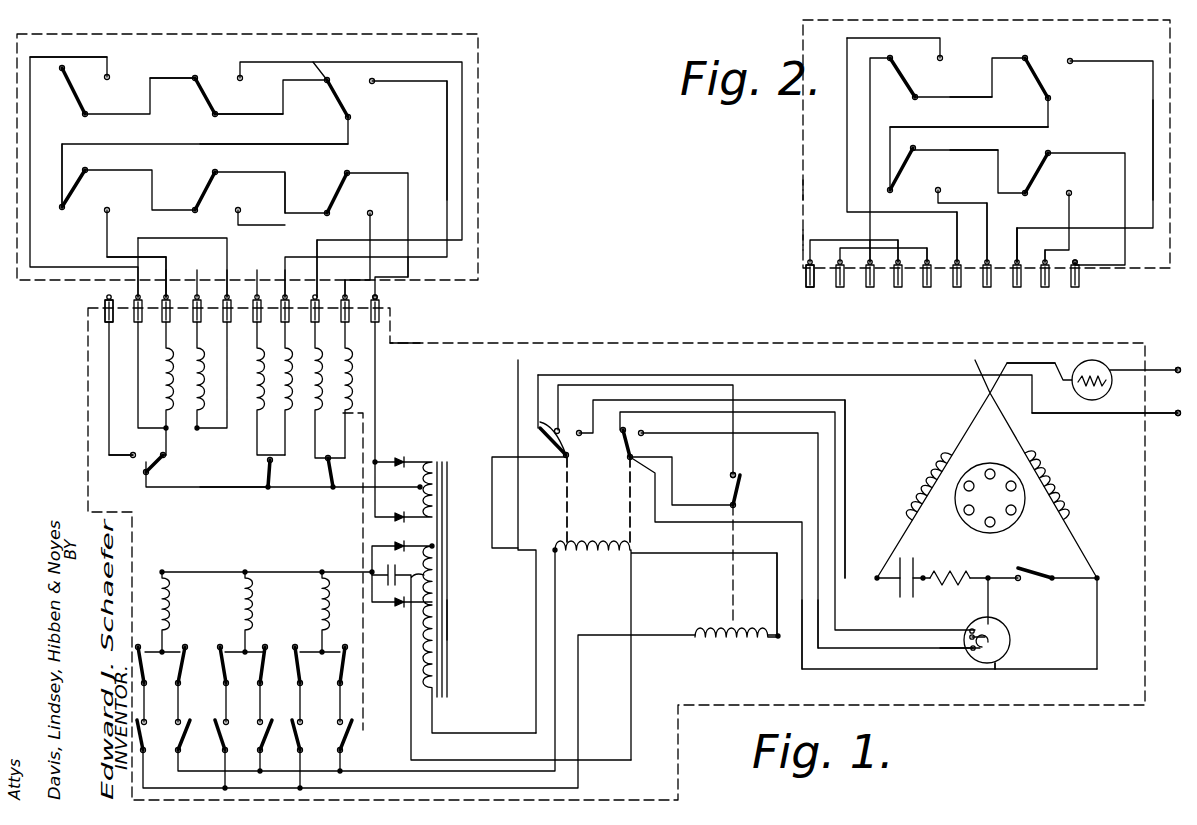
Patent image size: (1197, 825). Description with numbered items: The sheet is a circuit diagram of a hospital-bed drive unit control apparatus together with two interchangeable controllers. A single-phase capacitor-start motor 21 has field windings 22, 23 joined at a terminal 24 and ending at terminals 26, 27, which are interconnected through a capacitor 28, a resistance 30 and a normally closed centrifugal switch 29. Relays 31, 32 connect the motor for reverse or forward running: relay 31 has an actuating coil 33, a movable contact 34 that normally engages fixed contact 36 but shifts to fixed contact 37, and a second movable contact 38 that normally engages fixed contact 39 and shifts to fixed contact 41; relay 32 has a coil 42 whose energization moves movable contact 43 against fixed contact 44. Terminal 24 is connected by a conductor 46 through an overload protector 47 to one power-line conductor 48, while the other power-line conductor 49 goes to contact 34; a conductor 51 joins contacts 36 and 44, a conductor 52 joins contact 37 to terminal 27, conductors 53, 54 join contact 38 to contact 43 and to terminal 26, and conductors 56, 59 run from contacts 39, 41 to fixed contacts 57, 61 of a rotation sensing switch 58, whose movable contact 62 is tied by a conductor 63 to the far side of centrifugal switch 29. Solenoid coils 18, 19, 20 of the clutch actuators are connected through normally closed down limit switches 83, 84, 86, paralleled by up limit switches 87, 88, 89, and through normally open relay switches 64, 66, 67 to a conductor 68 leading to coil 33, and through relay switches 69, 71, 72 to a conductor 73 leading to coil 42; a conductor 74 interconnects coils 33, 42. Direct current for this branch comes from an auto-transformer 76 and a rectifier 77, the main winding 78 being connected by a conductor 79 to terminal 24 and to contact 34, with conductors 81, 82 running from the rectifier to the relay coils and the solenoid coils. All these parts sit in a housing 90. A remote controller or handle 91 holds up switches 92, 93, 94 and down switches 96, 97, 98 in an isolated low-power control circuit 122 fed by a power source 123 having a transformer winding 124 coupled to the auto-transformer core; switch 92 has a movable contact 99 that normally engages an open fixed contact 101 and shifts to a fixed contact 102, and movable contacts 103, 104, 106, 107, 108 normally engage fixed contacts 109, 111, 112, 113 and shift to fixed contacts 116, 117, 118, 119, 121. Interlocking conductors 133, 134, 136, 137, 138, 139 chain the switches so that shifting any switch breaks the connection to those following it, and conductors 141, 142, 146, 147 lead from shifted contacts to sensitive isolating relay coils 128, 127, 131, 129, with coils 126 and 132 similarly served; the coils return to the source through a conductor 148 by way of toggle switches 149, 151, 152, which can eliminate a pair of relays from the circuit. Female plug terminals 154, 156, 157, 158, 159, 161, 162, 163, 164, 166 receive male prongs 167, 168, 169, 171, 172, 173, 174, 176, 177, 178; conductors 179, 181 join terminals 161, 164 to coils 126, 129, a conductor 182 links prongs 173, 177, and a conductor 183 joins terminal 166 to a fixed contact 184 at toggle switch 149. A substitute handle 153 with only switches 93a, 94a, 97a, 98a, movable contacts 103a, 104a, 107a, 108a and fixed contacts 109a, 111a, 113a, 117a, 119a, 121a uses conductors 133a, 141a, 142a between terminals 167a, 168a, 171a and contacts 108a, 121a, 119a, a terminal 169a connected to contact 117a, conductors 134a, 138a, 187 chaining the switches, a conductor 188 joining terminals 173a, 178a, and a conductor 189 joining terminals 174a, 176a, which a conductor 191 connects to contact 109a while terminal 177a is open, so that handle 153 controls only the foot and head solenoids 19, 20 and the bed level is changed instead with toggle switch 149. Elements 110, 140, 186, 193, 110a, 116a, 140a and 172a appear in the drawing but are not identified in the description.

In FIG. 1, the solenoid coil 18 is at (170, 608).
In FIG. 1, the solenoid coil 19 is at (252, 608).
In FIG. 1, the solenoid coil 20 is at (325, 610).
In FIG. 1, the electric motor 21 is at (1080, 518).
In FIG. 1, the field winding 22 is at (1055, 478).
In FIG. 1, the field winding 23 is at (928, 472).
In FIG. 1, the terminal 24 is at (985, 393).
In FIG. 1, the terminal 26 is at (1100, 576).
In FIG. 1, the terminal 27 is at (875, 581).
In FIG. 1, the capacitor 28 is at (900, 595).
In FIG. 1, the centrifugal switch 29 is at (1040, 585).
In FIG. 1, the resistance 30 is at (952, 578).
In FIG. 1, the relay 31 is at (555, 490).
In FIG. 1, the relay 32 is at (708, 570).
In FIG. 1, the actuating coil 33 is at (590, 545).
In FIG. 1, the movable contact 34 is at (568, 458).
In FIG. 1, the fixed contact 36 is at (538, 420).
In FIG. 1, the fixed contact 37 is at (578, 431).
In FIG. 1, the movable contact 38 is at (627, 452).
In FIG. 1, the fixed contact 39 is at (625, 445).
In FIG. 1, the fixed contact 41 is at (645, 431).
In FIG. 1, the relay coil 42 is at (722, 640).
In FIG. 1, the movable contact 43 is at (743, 487).
In FIG. 1, the fixed contact 44 is at (736, 472).
In FIG. 1, the conductor 46 is at (1033, 363).
In FIG. 1, the overload protector 47 is at (1082, 366).
In FIG. 1, the power line conductor 48 is at (1138, 366).
In FIG. 1, the power line conductor 49 is at (1085, 415).
In FIG. 1, the conductor 51 is at (735, 392).
In FIG. 1, the conductor 52 is at (846, 425).
In FIG. 1, the conductor 53 is at (675, 482).
In FIG. 1, the conductor 54 is at (895, 668).
In FIG. 1, the conductor 56 is at (800, 412).
In FIG. 1, the fixed contact 57 is at (968, 628).
In FIG. 1, the rotation sensing switch 58 is at (994, 668).
In FIG. 1, the conductor 59 is at (855, 650).
In FIG. 1, the fixed contact 61 is at (972, 660).
In FIG. 1, the movable contact 62 is at (992, 645).
In FIG. 1, the conductor 63 is at (1003, 615).
In FIG. 1, the relay switch 64 is at (185, 735).
In FIG. 1, the relay switch 66 is at (265, 735).
In FIG. 1, the relay switch 67 is at (348, 742).
In FIG. 1, the conductor 68 is at (448, 770).
In FIG. 1, the relay switch 69 is at (145, 742).
In FIG. 1, the relay switch 71 is at (228, 738).
In FIG. 1, the relay switch 72 is at (305, 738).
In FIG. 1, the conductor 73 is at (480, 787).
In FIG. 1, the conductor 74 is at (777, 582).
In FIG. 1, the auto-transformer 76 is at (450, 612).
In FIG. 1, the rectifier 77 is at (395, 612).
In FIG. 1, the main winding 78 is at (428, 668).
In FIG. 1, the conductor 79 is at (536, 600).
In FIG. 1, the conductor 81 is at (625, 700).
In FIG. 1, the conductor 82 is at (280, 571).
In FIG. 1, the down limit switch 83 is at (182, 665).
In FIG. 1, the down limit switch 84 is at (268, 667).
In FIG. 1, the down limit switch 86 is at (345, 672).
In FIG. 1, the up limit switch 87 is at (140, 655).
In FIG. 1, the up limit switch 88 is at (225, 668).
In FIG. 1, the up limit switch 89 is at (303, 670).
In FIG. 1, the housing 90 is at (690, 343).
In FIG. 1, the controller or handle 91 is at (480, 205).
In FIG. 1, the manual switch 92 is at (98, 95).
In FIG. 1, the manual switch 93 is at (230, 95).
In FIG. 1, the manual switch 94 is at (358, 105).
In FIG. 1, the manual switch 96 is at (80, 218).
In FIG. 1, the manual switch 97 is at (250, 185).
In FIG. 1, the manual switch 98 is at (352, 190).
In FIG. 1, the movable contact 99 is at (80, 114).
In FIG. 1, the fixed contact 101 is at (60, 70).
In FIG. 1, the fixed contact 102 is at (109, 75).
In FIG. 1, the movable contact 103 is at (203, 95).
In FIG. 1, the movable contact 104 is at (338, 100).
In FIG. 1, the movable contact 106 is at (80, 186).
In FIG. 1, the movable contact 107 is at (205, 200).
In FIG. 1, the movable contact 108 is at (350, 175).
In FIG. 1, the fixed contact 109 is at (193, 76).
In FIG. 1, the pivot 110 is at (325, 216).
In FIG. 1, the fixed contact 111 is at (333, 60).
In FIG. 1, the fixed contact 112 is at (60, 208).
In FIG. 1, the fixed contact 113 is at (193, 214).
In FIG. 1, the fixed contact 116 is at (238, 78).
In FIG. 1, the fixed contact 117 is at (374, 78).
In FIG. 1, the fixed contact 118 is at (109, 209).
In FIG. 1, the fixed contact 119 is at (241, 209).
In FIG. 1, the fixed contact 121 is at (356, 248).
In FIG. 1, the control circuit 122 is at (420, 347).
In FIG. 1, the power source 123 is at (415, 478).
In FIG. 1, the transformer winding 124 is at (428, 485).
In FIG. 1, the relay coil 126 is at (190, 368).
In FIG. 1, the relay coil 127 is at (280, 368).
In FIG. 1, the relay coil 128 is at (340, 365).
In FIG. 1, the relay coil 129 is at (160, 365).
In FIG. 1, the relay coil 131 is at (250, 368).
In FIG. 1, the relay coil 132 is at (310, 365).
In FIG. 1, the conductor 133 is at (420, 222).
In FIG. 1, the conductor 134 is at (286, 185).
In FIG. 1, the conductor 136 is at (152, 185).
In FIG. 1, the conductor 137 is at (237, 146).
In FIG. 1, the conductor 138 is at (247, 117).
In FIG. 1, the conductor 139 is at (122, 117).
In FIG. 1, the conductor 140 is at (447, 125).
In FIG. 1, the conductor 141 is at (370, 268).
In FIG. 1, the conductor 142 is at (335, 268).
In FIG. 1, the conductor 146 is at (250, 62).
In FIG. 1, the conductor 147 is at (68, 55).
In FIG. 1, the conductor 148 is at (222, 488).
In FIG. 1, the toggle switch 149 is at (140, 478).
In FIG. 1, the toggle switch 151 is at (278, 488).
In FIG. 1, the toggle switch 152 is at (338, 490).
In FIG. 2, the controller or handle 153 is at (803, 158).
In FIG. 1, the terminal 154 is at (382, 320).
In FIG. 2, the terminal 154 is at (1078, 292).
In FIG. 1, the terminal 156 is at (358, 320).
In FIG. 2, the terminal 156 is at (1052, 292).
In FIG. 1, the terminal 157 is at (330, 315).
In FIG. 2, the terminal 157 is at (1020, 288).
In FIG. 1, the terminal 158 is at (301, 315).
In FIG. 2, the terminal 158 is at (992, 292).
In FIG. 1, the terminal 159 is at (272, 315).
In FIG. 2, the terminal 159 is at (960, 288).
In FIG. 1, the terminal 161 is at (243, 315).
In FIG. 2, the terminal 161 is at (932, 292).
In FIG. 1, the terminal 162 is at (212, 320).
In FIG. 2, the terminal 162 is at (900, 288).
In FIG. 1, the terminal 163 is at (180, 315).
In FIG. 2, the terminal 163 is at (875, 292).
In FIG. 1, the terminal 164 is at (151, 315).
In FIG. 2, the terminal 164 is at (840, 288).
In FIG. 1, the terminal 166 is at (121, 315).
In FIG. 2, the terminal 166 is at (805, 288).
In FIG. 1, the prong 167 is at (380, 298).
In FIG. 1, the prong 168 is at (333, 278).
In FIG. 1, the prong 169 is at (302, 278).
In FIG. 1, the prong 171 is at (273, 278).
In FIG. 1, the prong 172 is at (243, 278).
In FIG. 1, the prong 173 is at (214, 278).
In FIG. 1, the prong 174 is at (183, 278).
In FIG. 1, the prong 176 is at (140, 260).
In FIG. 1, the prong 177 is at (84, 177).
In FIG. 1, the prong 178 is at (104, 298).
In FIG. 1, the conductor 179 is at (210, 432).
In FIG. 1, the conductor 181 is at (138, 395).
In FIG. 1, the conductor 182 is at (232, 245).
In FIG. 1, the conductor 183 is at (109, 372).
In FIG. 1, the fixed contact 184 is at (133, 455).
In FIG. 2, the selector unit 186 is at (803, 190).
In FIG. 2, the conductor 187 is at (915, 128).
In FIG. 2, the conductor 188 is at (803, 232).
In FIG. 2, the conductor 189 is at (868, 262).
In FIG. 2, the conductor 191 is at (847, 100).
In FIG. 1, the conductor 193 is at (168, 256).
In FIG. 2, the manual switch 93a is at (930, 80).
In FIG. 2, the manual switch 94a is at (1065, 82).
In FIG. 2, the manual switch 97a is at (928, 163).
In FIG. 2, the manual switch 98a is at (1052, 173).
In FIG. 2, the movable contact 103a is at (903, 90).
In FIG. 2, the movable contact 104a is at (1040, 88).
In FIG. 2, the movable contact 107a is at (905, 185).
In FIG. 2, the movable contact 108a is at (1050, 153).
In FIG. 2, the fixed contact 109a is at (888, 56).
In FIG. 2, the pivot 110a is at (1022, 190).
In FIG. 2, the fixed contact 111a is at (1038, 46).
In FIG. 2, the fixed contact 113a is at (913, 139).
In FIG. 2, the contact 116a is at (942, 58).
In FIG. 2, the fixed contact 117a is at (1072, 60).
In FIG. 2, the fixed contact 119a is at (941, 190).
In FIG. 2, the fixed contact 121a is at (1070, 198).
In FIG. 2, the conductor 133a is at (1093, 189).
In FIG. 2, the conductor 134a is at (975, 147).
In FIG. 2, the conductor 138a is at (937, 100).
In FIG. 2, the conductor 140a is at (1153, 105).
In FIG. 2, the conductor 141a is at (1050, 248).
In FIG. 2, the conductor 142a is at (992, 220).
In FIG. 2, the terminal 167a is at (1080, 285).
In FIG. 2, the terminal 168a is at (1055, 268).
In FIG. 2, the terminal 169a is at (1020, 262).
In FIG. 2, the terminal 171a is at (988, 262).
In FIG. 2, the conductor 172a is at (960, 262).
In FIG. 2, the terminal 173a is at (930, 260).
In FIG. 2, the terminal 174a is at (898, 260).
In FIG. 2, the terminal 176a is at (868, 260).
In FIG. 2, the terminal 177a is at (840, 252).
In FIG. 2, the terminal 178a is at (803, 262).